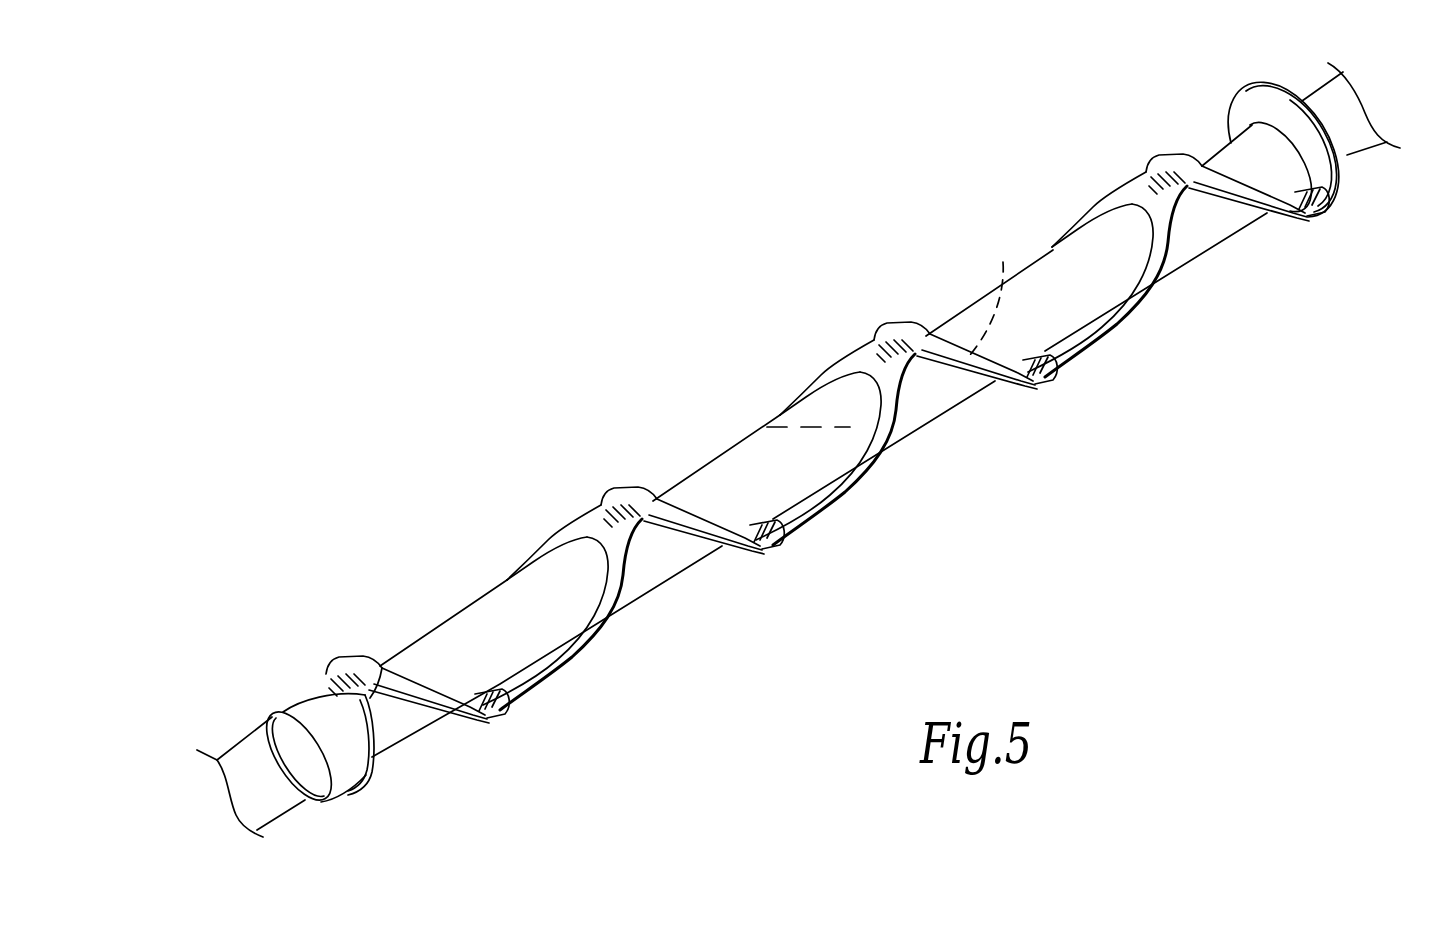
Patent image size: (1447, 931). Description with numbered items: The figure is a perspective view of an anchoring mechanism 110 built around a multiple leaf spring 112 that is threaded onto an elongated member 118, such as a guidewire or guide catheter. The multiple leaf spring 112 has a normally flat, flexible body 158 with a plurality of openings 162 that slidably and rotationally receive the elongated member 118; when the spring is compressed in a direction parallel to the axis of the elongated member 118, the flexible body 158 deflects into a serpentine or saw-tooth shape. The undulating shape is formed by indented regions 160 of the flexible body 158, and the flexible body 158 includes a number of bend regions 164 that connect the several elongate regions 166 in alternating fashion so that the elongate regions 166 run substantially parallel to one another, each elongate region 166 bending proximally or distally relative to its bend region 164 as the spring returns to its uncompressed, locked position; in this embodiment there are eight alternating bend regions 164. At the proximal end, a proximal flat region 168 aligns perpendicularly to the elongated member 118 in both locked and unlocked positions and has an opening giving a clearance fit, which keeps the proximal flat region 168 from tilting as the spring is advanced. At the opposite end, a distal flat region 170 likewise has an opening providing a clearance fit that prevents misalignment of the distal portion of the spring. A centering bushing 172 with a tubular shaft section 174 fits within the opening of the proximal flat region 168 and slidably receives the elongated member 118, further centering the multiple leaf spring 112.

The anchoring mechanism 110 is at (767, 150).
The multiple leaf spring 112 is at (880, 262).
The elongated member 118 is at (1347, 155).
The flexible body 158 is at (1147, 280).
The indented regions 160 is at (862, 308).
The openings 162 is at (748, 420).
The bend regions 164 is at (337, 657).
The elongate regions 166 is at (553, 532).
The proximal flat region 168 is at (311, 689).
The distal flat region 170 is at (1252, 93).
The centering bushing 172 is at (250, 707).
The tubular shaft section 174 is at (340, 752).